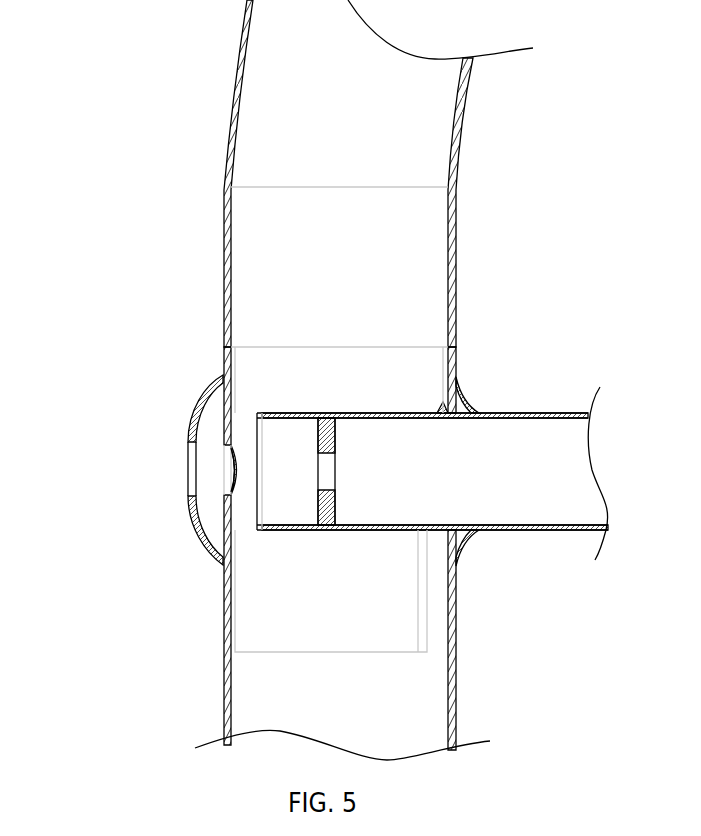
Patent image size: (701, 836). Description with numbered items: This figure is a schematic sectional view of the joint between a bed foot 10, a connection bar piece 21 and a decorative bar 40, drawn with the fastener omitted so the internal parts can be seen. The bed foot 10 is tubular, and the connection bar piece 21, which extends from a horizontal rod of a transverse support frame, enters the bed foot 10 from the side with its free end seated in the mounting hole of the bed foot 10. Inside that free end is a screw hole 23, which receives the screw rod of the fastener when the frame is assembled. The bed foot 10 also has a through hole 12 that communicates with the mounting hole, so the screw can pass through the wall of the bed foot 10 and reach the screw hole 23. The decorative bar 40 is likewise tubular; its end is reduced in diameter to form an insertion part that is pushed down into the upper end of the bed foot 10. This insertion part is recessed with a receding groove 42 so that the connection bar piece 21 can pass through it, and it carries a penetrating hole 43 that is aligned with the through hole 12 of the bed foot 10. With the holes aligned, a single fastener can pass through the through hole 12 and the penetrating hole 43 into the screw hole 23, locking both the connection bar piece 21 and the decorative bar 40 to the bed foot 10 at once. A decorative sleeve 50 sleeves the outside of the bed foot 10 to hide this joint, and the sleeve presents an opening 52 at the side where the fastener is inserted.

The bed foot 10 is at (223, 692).
The decorative bar 40 is at (250, 153).
The decorative sleeve 50 is at (200, 407).
The opening 52 is at (192, 463).
The through hole 12 is at (225, 475).
The penetrating hole 43 is at (233, 492).
The connection bar piece 21 is at (550, 532).
The screw hole 23 is at (332, 472).
The receding groove 42 is at (420, 603).